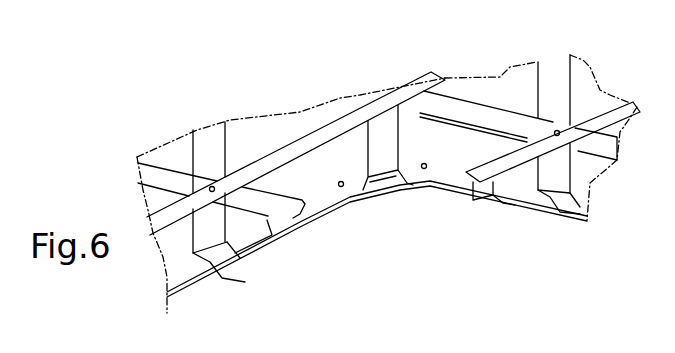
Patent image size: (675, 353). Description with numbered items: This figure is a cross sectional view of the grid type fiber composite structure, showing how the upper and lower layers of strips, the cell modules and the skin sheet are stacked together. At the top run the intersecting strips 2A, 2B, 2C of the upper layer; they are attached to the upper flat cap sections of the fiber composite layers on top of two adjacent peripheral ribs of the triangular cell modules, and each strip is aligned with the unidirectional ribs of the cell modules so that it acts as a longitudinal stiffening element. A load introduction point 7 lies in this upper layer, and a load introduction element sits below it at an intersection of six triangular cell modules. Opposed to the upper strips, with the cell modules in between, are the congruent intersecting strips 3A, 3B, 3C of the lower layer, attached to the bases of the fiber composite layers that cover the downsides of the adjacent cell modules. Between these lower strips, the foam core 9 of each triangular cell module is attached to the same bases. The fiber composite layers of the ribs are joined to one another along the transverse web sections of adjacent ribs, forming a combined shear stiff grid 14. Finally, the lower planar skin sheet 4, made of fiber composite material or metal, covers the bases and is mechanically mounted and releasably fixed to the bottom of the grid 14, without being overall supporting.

The intersecting strip 2A is at (317, 127).
The intersecting strip 2B is at (208, 138).
The intersecting strip 2C is at (443, 97).
The load introduction point 7 is at (212, 186).
The combined shear stiff grid 14 is at (327, 203).
The foam core 9 is at (432, 149).
The congruent intersecting strip 3A is at (492, 205).
The congruent intersecting strip 3B is at (233, 277).
The congruent intersecting strip 3C is at (283, 237).
The planar skin sheet 4 is at (562, 217).